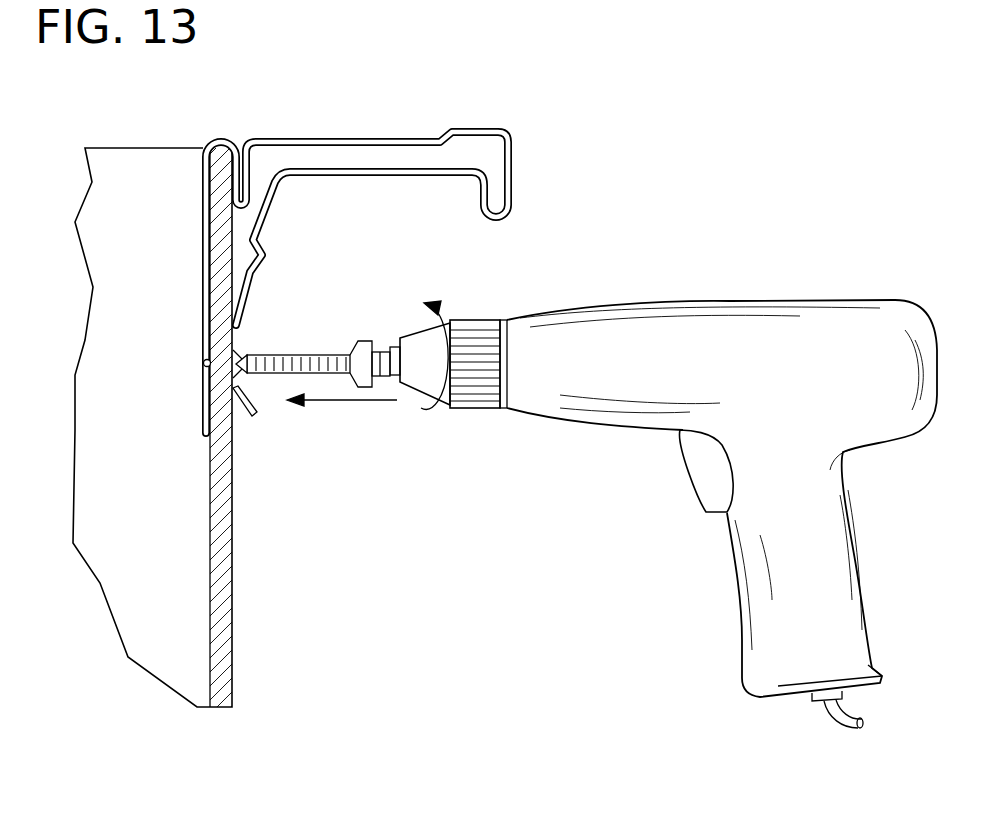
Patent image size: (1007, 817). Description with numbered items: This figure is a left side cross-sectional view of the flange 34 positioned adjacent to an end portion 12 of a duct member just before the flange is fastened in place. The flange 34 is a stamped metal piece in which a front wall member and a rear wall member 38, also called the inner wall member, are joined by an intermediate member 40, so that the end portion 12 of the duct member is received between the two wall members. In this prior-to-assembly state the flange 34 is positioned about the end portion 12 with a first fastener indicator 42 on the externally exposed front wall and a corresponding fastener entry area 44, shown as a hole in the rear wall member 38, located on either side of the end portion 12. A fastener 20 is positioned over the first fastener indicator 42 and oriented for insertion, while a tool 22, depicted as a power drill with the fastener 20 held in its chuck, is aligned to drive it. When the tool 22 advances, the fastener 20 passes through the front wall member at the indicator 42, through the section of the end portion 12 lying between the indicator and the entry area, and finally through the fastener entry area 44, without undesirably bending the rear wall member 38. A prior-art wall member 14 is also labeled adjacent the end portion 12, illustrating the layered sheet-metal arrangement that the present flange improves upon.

The end portion 12 is at (232, 585).
The wall member 14 is at (238, 342).
The fastener 20 is at (333, 352).
The tool 22 is at (592, 404).
The flange 34 is at (530, 183).
The rear wall member 38 is at (203, 252).
The intermediate member 40 is at (220, 136).
The first fastener indicator 42 is at (245, 378).
The fastener entry area 44 is at (203, 362).